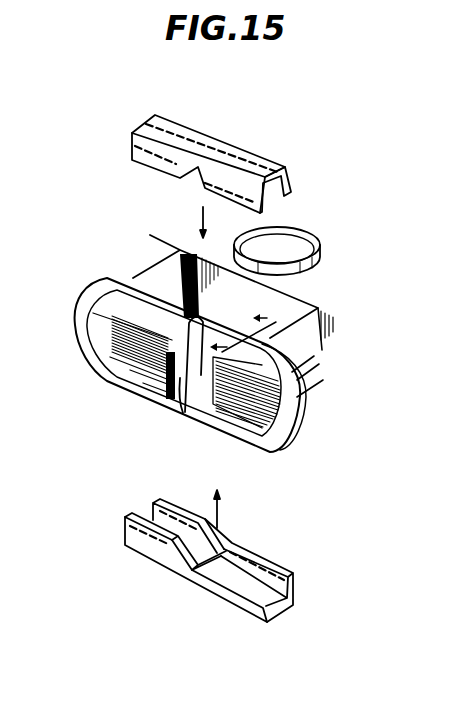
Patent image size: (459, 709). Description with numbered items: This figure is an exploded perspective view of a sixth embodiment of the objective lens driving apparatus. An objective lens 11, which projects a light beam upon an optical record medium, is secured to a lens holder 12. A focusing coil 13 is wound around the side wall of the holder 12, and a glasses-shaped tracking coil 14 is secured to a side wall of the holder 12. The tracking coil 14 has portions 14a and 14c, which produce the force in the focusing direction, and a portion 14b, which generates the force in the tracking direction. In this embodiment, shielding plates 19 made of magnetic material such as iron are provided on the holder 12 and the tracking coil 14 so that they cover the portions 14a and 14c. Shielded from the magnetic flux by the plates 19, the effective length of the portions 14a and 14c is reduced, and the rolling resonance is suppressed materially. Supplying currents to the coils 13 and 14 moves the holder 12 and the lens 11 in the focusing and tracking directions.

The objective lens 11 is at (300, 250).
The lens holder 12 is at (320, 300).
The focusing coil 13 is at (308, 382).
The tracking coil 14 is at (82, 327).
The portion of tracking coil 14a is at (203, 330).
The portion of tracking coil 14b is at (186, 414).
The portion of tracking coil 14c is at (150, 385).
The shielding plate 19 is at (268, 161).